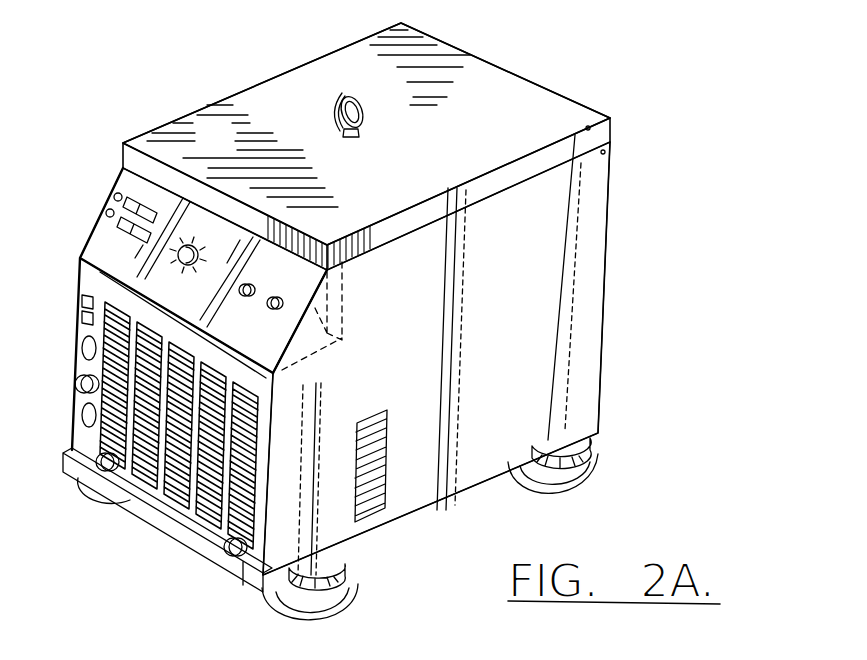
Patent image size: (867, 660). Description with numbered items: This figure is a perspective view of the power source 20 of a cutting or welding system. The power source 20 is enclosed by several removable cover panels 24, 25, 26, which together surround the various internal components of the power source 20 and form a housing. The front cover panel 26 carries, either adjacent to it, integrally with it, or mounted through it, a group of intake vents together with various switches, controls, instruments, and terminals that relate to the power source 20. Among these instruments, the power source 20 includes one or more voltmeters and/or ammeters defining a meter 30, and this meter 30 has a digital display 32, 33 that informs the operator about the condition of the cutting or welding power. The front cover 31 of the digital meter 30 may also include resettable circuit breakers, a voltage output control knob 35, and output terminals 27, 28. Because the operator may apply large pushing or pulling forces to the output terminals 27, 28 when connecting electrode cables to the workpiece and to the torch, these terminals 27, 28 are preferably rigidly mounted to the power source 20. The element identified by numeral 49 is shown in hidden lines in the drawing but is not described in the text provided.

The power source 20 is at (606, 58).
The removable cover panel 24 is at (562, 115).
The removable cover panel 25 is at (592, 262).
The front cover panel 26 is at (98, 327).
The output terminal 27 is at (103, 463).
The output terminal 28 is at (232, 549).
The meter 30 is at (107, 192).
The front cover of the digital meter 31 is at (98, 246).
The digital display 32 is at (150, 208).
The digital display 33 is at (133, 228).
The voltage output control knob 35 is at (181, 269).
The hidden control board 49 is at (318, 311).